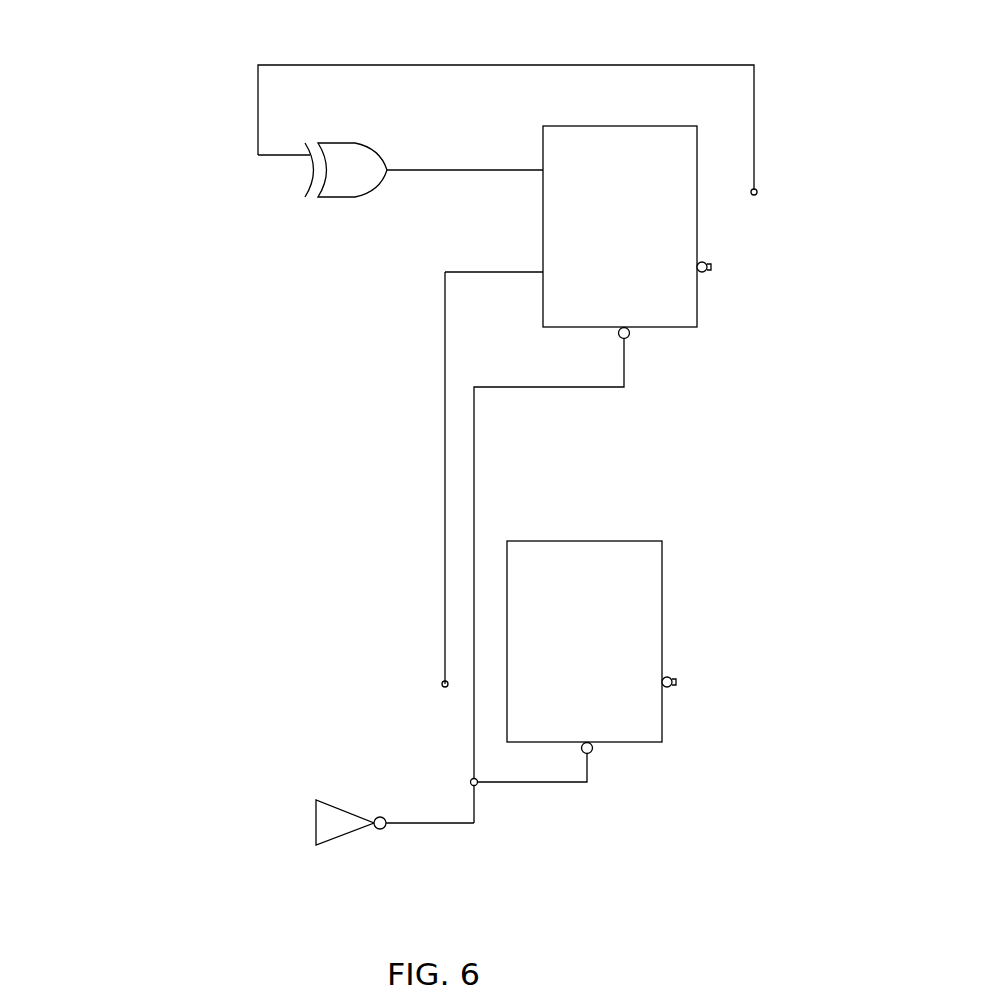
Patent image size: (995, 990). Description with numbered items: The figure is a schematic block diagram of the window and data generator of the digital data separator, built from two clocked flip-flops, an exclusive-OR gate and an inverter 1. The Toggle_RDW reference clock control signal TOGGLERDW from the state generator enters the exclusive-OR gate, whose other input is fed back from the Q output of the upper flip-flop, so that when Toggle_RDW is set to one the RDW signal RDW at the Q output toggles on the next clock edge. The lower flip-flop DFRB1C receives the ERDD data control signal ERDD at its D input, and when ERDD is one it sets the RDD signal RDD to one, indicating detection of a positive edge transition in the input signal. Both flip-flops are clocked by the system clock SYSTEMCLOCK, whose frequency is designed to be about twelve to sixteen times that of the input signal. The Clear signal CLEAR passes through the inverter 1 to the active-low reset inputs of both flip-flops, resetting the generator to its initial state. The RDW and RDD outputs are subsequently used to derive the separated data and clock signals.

The inverter 1 is at (351, 822).
The Toggle_RDW reference clock control signal TOGGLERDW is at (310, 182).
The RDW signal RDW is at (697, 192).
The D flip-flop DFRB1C is at (591, 647).
The RDD signal RDD is at (662, 608).
The ERDD data control signal ERDD is at (507, 569).
The system clock SYSTEMCLOCK is at (507, 684).
The Clear signal CLEAR is at (316, 823).